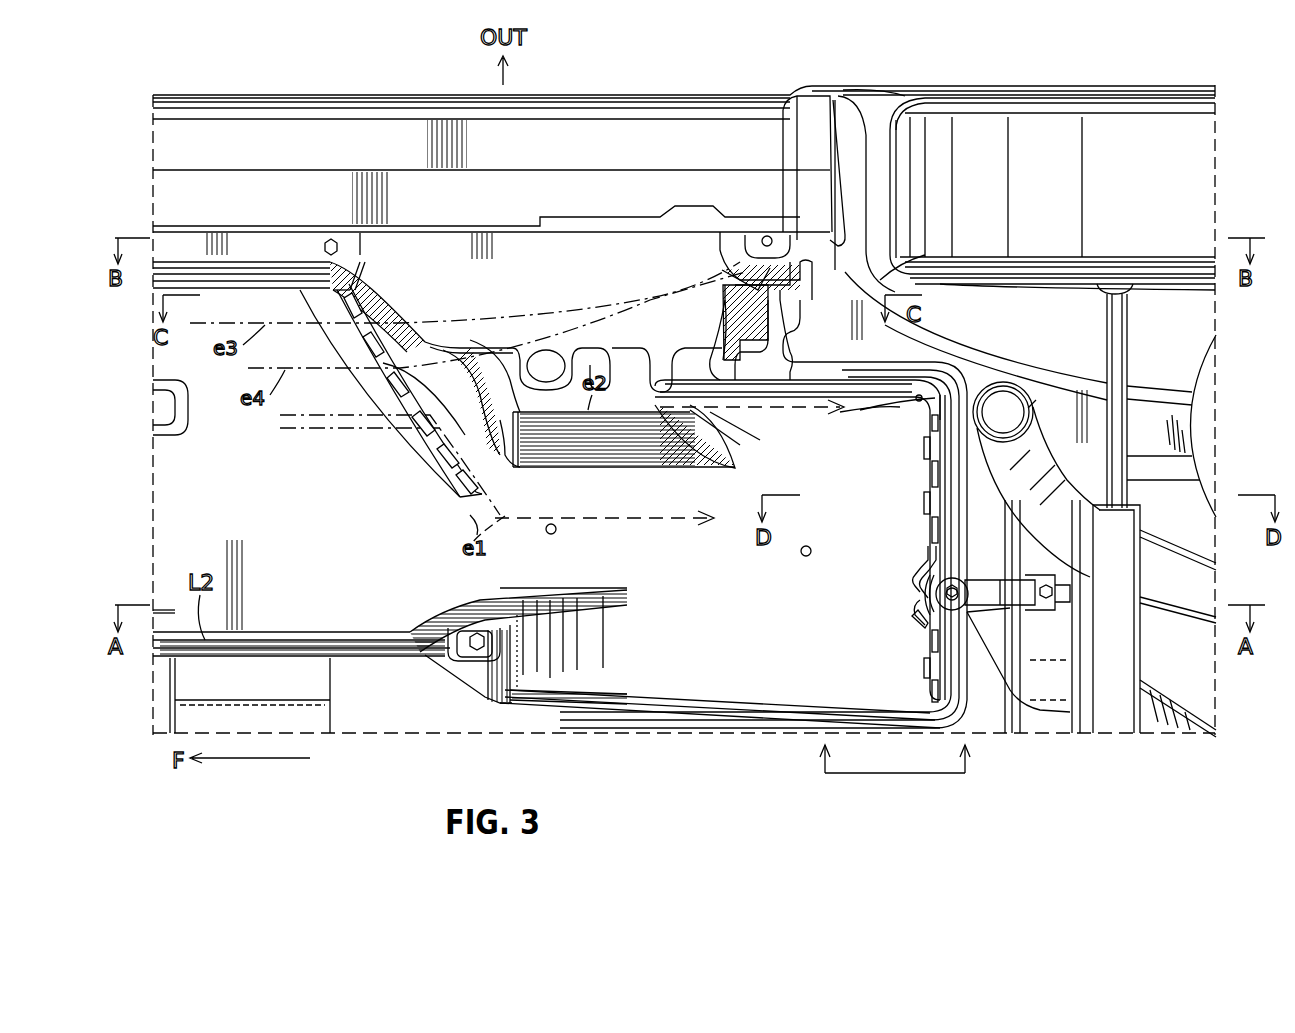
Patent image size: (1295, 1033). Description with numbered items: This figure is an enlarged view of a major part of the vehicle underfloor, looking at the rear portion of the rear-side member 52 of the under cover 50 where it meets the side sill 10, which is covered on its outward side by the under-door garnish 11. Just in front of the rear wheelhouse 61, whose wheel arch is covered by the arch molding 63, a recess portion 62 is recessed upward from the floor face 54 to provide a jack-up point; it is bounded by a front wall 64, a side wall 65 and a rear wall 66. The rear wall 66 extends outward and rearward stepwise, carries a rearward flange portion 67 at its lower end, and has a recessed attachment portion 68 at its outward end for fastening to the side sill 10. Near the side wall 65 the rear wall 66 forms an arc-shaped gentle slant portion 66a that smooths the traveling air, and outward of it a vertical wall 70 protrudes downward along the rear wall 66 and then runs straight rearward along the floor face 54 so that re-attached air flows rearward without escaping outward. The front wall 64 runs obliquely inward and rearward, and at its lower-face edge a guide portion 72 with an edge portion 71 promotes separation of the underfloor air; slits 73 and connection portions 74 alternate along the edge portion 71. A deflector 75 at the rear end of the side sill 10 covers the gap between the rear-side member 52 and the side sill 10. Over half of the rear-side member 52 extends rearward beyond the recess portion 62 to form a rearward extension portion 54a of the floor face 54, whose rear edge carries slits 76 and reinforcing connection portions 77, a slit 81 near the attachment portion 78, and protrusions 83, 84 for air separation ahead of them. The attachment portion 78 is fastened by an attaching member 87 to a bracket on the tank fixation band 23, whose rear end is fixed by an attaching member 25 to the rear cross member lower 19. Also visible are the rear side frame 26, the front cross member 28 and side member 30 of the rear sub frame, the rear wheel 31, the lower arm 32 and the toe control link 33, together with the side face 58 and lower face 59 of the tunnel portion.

The side sill 10 is at (236, 185).
The under-door garnish 11 is at (257, 98).
The rear cross member lower 19 is at (1045, 705).
The tank fixation band 23 is at (998, 620).
The attaching member 25 is at (1048, 575).
The rear side frame 26 is at (1152, 448).
The front cross member 28 is at (1112, 642).
The side member 30 is at (1195, 548).
The rear wheel 31 is at (1155, 195).
The lower arm 32 is at (1200, 357).
The toe control link 33 is at (1130, 345).
The under cover 50 is at (705, 735).
The rear-side member 52 is at (606, 722).
The floor face 54 is at (204, 505).
The rearward extension portion 54a is at (872, 768).
The side face 58 is at (213, 640).
The lower face 59 is at (294, 622).
The rear wheelhouse 61 is at (838, 75).
The recess portion 62 is at (560, 285).
The arch molding 63 is at (868, 90).
The front wall 64 is at (388, 296).
The side wall 65 is at (584, 450).
The rear wall 66 is at (728, 307).
The gentle slant portion 66a is at (712, 420).
The flange portion 67 is at (895, 272).
The attachment portion 68 is at (758, 232).
The vertical wall 70 is at (808, 385).
The edge portion 71 is at (350, 347).
The guide portion 72 is at (372, 378).
The slit 73 is at (425, 340).
The connection portion 74 is at (400, 332).
The deflector 75 is at (846, 245).
The slit 76 is at (950, 535).
The connection portion 77 is at (970, 438).
The attachment portion 78 is at (926, 626).
The slit 81 is at (905, 597).
The protrusion 83 is at (922, 447).
The protrusion 84 is at (913, 562).
The attaching member 87 is at (915, 578).